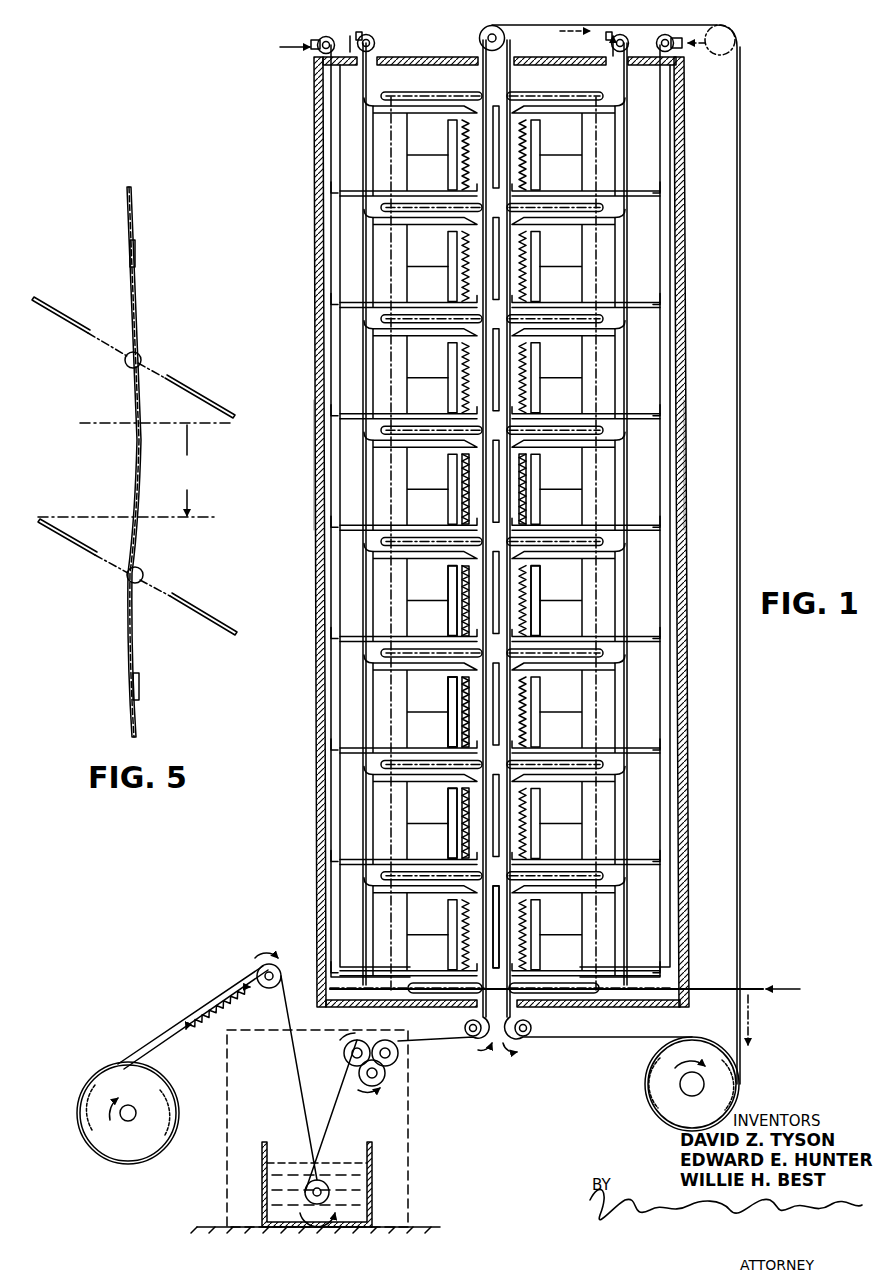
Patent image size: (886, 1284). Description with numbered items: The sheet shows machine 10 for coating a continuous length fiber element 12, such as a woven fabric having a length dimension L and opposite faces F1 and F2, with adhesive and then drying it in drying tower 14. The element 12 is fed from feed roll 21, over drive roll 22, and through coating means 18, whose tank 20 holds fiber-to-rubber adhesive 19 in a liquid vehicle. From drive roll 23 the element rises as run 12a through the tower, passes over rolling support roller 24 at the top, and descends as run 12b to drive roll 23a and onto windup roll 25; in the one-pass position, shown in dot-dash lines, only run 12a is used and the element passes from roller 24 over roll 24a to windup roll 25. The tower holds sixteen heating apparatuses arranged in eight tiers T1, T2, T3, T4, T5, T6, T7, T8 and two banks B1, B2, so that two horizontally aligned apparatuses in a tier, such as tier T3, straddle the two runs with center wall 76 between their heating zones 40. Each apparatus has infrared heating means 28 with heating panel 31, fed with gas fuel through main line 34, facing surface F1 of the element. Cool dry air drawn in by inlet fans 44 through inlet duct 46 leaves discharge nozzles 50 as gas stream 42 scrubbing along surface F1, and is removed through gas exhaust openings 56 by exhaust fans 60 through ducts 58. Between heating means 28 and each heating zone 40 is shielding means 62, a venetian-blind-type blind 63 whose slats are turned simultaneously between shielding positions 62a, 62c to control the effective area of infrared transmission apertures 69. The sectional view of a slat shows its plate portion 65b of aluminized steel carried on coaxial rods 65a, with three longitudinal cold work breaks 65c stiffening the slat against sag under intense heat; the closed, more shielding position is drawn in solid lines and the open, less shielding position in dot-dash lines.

In FIG. 1, the machine 10 is at (300, 960).
In FIG. 1, the fiber element 12 is at (741, 330).
In FIG. 1, the element run 12a is at (450, 566).
In FIG. 1, the element run 12b is at (540, 566).
In FIG. 1, the drying tower 14 is at (322, 735).
In FIG. 1, the coating means 18 is at (410, 1170).
In FIG. 1, the adhesive 19 is at (285, 1160).
In FIG. 1, the tank 20 is at (365, 1160).
In FIG. 1, the feed roll 21 is at (108, 1160).
In FIG. 1, the drive roll 22 is at (266, 989).
In FIG. 1, the drive roll 23 is at (465, 1028).
In FIG. 1, the drive roll 23a is at (527, 1038).
In FIG. 1, the rolling support roller 24 is at (482, 34).
In FIG. 1, the drive roll 24a is at (741, 45).
In FIG. 1, the windup roll 25 is at (739, 1086).
In FIG. 1, the infrared heating means 28 is at (437, 711).
In FIG. 1, the infrared heating panel 31 is at (450, 702).
In FIG. 1, the gas fuel main line 34 is at (743, 989).
In FIG. 1, the heating zone 40 is at (500, 726).
In FIG. 1, the gas stream 42 is at (500, 612).
In FIG. 1, the inlet fan 44 is at (322, 40).
In FIG. 1, the inlet duct 46 is at (326, 470).
In FIG. 1, the discharge nozzle 50 is at (469, 833).
In FIG. 1, the gas exhaust opening 56 is at (450, 793).
In FIG. 1, the exhaust duct 58 is at (374, 88).
In FIG. 1, the exhaust fan 60 is at (375, 38).
In FIG. 1, the shielding means 62 is at (466, 475).
In FIG. 5, the shielding means 62 is at (118, 603).
In FIG. 5, the shutter slat position 62a is at (230, 420).
In FIG. 5, the shielding position 62c is at (130, 445).
In FIG. 5, the venetian-blind-type blind 63 is at (77, 634).
In FIG. 5, the coaxial rod 65a is at (140, 360).
In FIG. 5, the plate portion 65b is at (71, 453).
In FIG. 5, the cold work break 65c is at (138, 262).
In FIG. 5, the infrared transmission aperture 69 is at (187, 470).
In FIG. 1, the center wall 76 is at (476, 891).
In FIG. 1, the bank B1 is at (440, 987).
In FIG. 1, the bank B2 is at (565, 995).
In FIG. 1, the element face F1 is at (481, 72).
In FIG. 1, the element face F2 is at (488, 82).
In FIG. 1, the length dimension L is at (193, 1028).
In FIG. 1, the tier T1 is at (395, 905).
In FIG. 1, the tier T2 is at (395, 805).
In FIG. 1, the tier T3 is at (395, 690).
In FIG. 1, the tier T4 is at (395, 600).
In FIG. 1, the tier T5 is at (395, 505).
In FIG. 1, the tier T6 is at (395, 355).
In FIG. 1, the tier T7 is at (395, 262).
In FIG. 1, the tier T8 is at (395, 165).